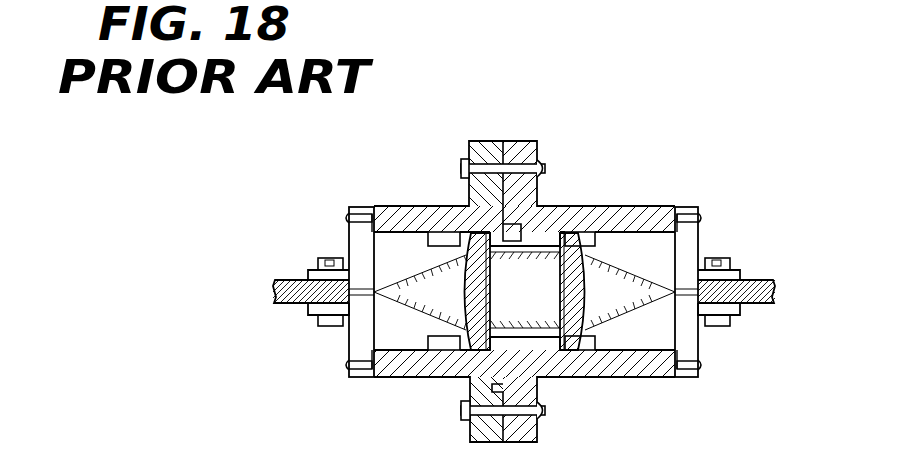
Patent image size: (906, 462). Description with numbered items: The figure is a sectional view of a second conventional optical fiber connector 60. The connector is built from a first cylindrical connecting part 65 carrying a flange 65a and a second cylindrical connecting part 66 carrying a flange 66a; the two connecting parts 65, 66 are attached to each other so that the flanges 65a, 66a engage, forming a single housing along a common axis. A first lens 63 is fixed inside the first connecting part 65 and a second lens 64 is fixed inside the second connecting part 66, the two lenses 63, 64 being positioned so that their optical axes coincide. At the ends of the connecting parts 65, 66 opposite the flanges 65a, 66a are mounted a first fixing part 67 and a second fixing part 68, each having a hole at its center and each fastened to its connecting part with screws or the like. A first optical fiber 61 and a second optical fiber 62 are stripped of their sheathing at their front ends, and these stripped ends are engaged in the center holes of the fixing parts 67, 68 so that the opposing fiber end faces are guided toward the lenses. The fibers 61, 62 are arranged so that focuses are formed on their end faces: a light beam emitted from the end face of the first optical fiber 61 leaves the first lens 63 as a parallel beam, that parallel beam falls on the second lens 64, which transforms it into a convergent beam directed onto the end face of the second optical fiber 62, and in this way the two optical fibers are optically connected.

The second conventional optical fiber connector 60 is at (637, 113).
The first optical fiber 61 is at (362, 277).
The second optical fiber 62 is at (690, 277).
The first lens 63 is at (480, 348).
The second lens 64 is at (568, 348).
The first cylindrical connecting part 65 is at (418, 210).
The flange of first connecting part 65a is at (487, 142).
The second cylindrical connecting part 66 is at (633, 206).
The flange of second connecting part 66a is at (517, 142).
The first fixing part 67 is at (357, 338).
The second fixing part 68 is at (693, 338).